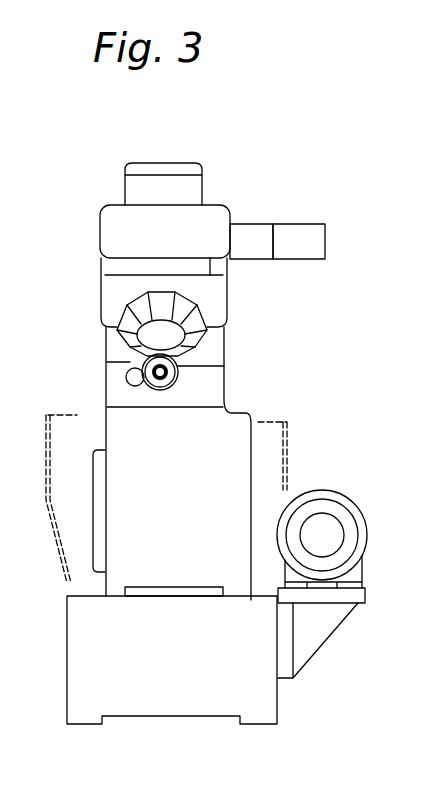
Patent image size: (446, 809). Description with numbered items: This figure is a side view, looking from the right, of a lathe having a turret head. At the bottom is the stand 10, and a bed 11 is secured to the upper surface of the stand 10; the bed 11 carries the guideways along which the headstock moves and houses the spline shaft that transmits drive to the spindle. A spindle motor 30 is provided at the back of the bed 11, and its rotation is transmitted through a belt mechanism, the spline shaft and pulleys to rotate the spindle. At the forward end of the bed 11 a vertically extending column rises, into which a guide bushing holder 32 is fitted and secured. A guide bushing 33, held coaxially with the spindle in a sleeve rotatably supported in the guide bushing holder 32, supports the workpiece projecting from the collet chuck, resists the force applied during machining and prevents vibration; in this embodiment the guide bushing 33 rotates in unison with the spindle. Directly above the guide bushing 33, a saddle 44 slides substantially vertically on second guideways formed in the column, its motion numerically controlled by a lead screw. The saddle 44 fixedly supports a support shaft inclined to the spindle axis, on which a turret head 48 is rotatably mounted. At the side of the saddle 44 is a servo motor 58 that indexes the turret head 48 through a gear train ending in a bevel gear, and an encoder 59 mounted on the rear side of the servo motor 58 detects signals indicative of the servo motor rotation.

The stand 10 is at (183, 712).
The bed 11 is at (243, 452).
The spindle motor 30 is at (345, 512).
The guide bushing holder 32 is at (183, 368).
The guide bushing 33 is at (166, 373).
The saddle 44 is at (110, 212).
The turret head 48 is at (118, 330).
The servo motor 58 is at (253, 232).
The encoder 59 is at (312, 233).